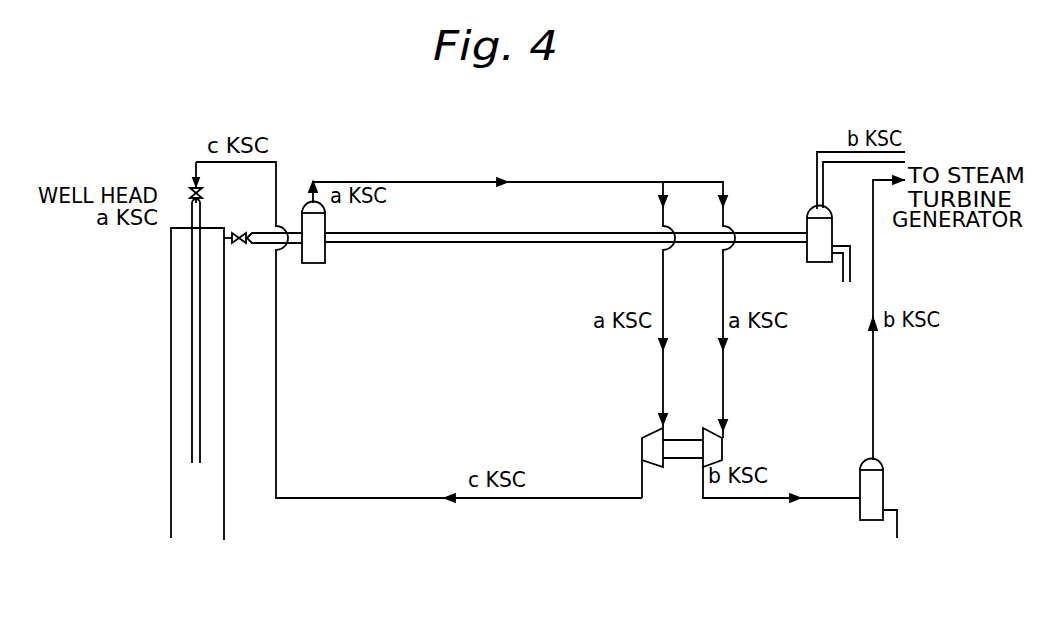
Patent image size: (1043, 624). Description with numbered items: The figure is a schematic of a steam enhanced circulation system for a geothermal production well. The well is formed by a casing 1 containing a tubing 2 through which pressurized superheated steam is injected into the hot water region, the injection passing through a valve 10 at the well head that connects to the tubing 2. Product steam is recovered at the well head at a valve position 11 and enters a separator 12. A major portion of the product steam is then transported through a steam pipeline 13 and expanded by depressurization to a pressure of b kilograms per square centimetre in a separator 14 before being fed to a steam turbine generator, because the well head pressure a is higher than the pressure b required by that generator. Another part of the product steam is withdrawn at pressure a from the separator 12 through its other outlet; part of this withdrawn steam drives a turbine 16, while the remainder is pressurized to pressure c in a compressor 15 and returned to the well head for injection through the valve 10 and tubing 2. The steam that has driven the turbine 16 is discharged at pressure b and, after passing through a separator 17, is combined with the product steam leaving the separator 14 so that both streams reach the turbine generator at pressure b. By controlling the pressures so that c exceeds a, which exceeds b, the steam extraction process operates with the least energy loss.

The casing 1 is at (227, 498).
The tubing 2 is at (202, 448).
The valve 10 is at (213, 182).
The valve position 11 is at (263, 224).
The separator 12 is at (325, 257).
The steam pipeline 13 is at (457, 244).
The separator 14 is at (807, 253).
The compressor 15 is at (642, 440).
The turbine 16 is at (722, 448).
The separator 17 is at (860, 517).